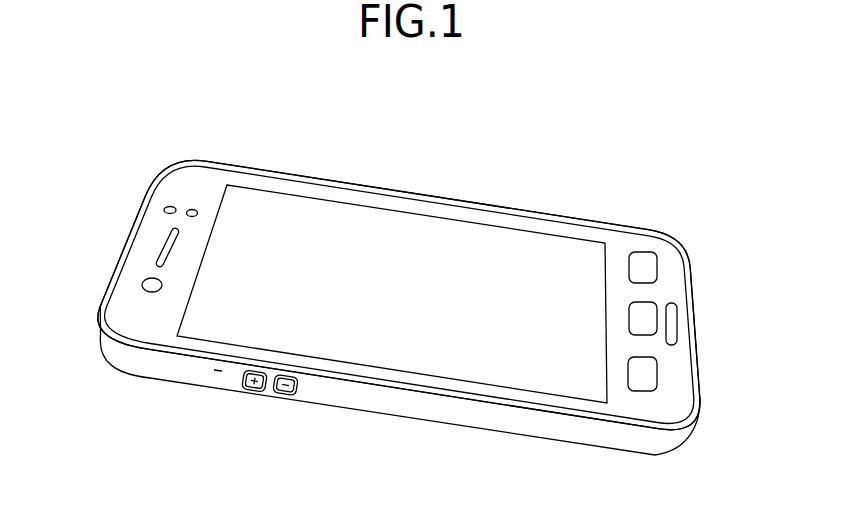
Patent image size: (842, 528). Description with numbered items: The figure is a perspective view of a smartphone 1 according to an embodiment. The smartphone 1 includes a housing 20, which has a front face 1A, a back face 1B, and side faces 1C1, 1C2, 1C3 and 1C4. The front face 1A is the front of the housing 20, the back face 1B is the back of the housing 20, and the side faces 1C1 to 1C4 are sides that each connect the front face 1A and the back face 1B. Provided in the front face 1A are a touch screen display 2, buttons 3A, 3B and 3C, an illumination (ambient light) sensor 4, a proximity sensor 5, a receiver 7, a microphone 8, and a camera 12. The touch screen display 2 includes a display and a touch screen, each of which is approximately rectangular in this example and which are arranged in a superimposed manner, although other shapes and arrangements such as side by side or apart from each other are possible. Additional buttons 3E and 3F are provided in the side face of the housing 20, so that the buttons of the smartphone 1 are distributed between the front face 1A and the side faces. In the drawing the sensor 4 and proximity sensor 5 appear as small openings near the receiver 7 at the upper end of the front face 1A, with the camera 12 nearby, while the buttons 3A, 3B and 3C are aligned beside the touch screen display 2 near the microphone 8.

The smartphone 1 is at (459, 128).
The front face 1A is at (128, 313).
The back face 1B is at (160, 385).
The side face 1C1 is at (143, 185).
The side face 1C2 is at (700, 362).
The side face 1C3 is at (467, 416).
The side face 1C4 is at (348, 183).
The touch screen display 2 is at (478, 240).
The button 3A is at (657, 383).
The button 3B is at (652, 301).
The button 3C is at (641, 251).
The button 3E is at (258, 391).
The button 3F is at (289, 395).
The illumination sensor 4 is at (164, 209).
The proximity sensor 5 is at (193, 209).
The receiver 7 is at (160, 241).
The microphone 8 is at (672, 325).
The camera 12 is at (141, 285).
The housing 20 is at (218, 373).